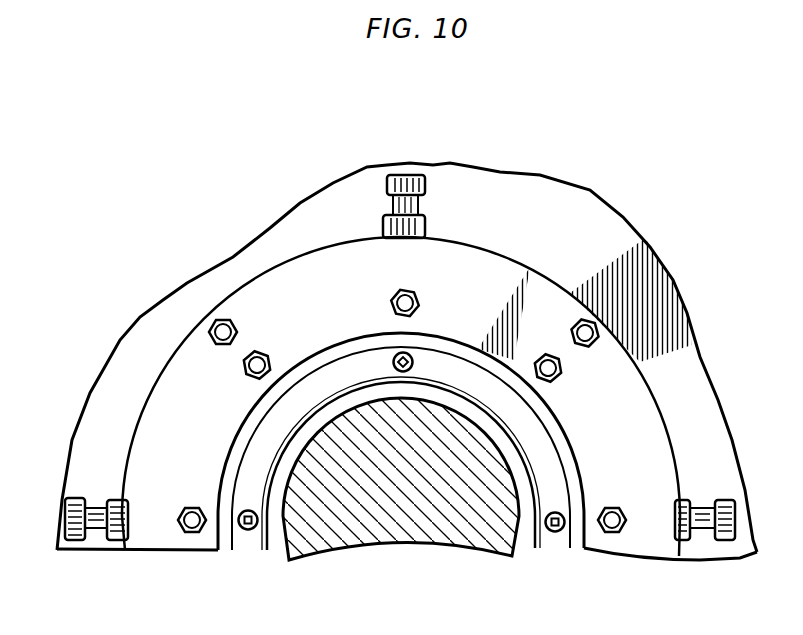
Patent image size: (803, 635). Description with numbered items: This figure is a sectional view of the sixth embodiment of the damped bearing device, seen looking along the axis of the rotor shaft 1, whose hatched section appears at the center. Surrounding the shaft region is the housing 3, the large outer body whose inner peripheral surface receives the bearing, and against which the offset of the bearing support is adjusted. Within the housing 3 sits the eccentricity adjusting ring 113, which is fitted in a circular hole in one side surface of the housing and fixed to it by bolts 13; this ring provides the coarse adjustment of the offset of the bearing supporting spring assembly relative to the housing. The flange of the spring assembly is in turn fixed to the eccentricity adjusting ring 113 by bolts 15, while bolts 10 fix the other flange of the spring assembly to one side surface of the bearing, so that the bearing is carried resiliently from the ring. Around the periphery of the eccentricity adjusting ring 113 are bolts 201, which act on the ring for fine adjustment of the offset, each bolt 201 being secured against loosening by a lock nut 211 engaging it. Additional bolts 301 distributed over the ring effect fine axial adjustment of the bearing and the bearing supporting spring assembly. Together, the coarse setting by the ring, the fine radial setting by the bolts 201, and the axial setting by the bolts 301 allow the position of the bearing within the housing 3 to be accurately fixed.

The rotor shaft 1 is at (456, 533).
The housing 3 is at (630, 228).
The bolts 10 is at (553, 533).
The bolts 13 is at (582, 333).
The bolts 15 is at (561, 362).
The eccentricity adjusting ring 113 is at (520, 278).
The bolts 201 is at (386, 186).
The lock nuts 211 is at (422, 228).
The bolts 301 is at (419, 303).